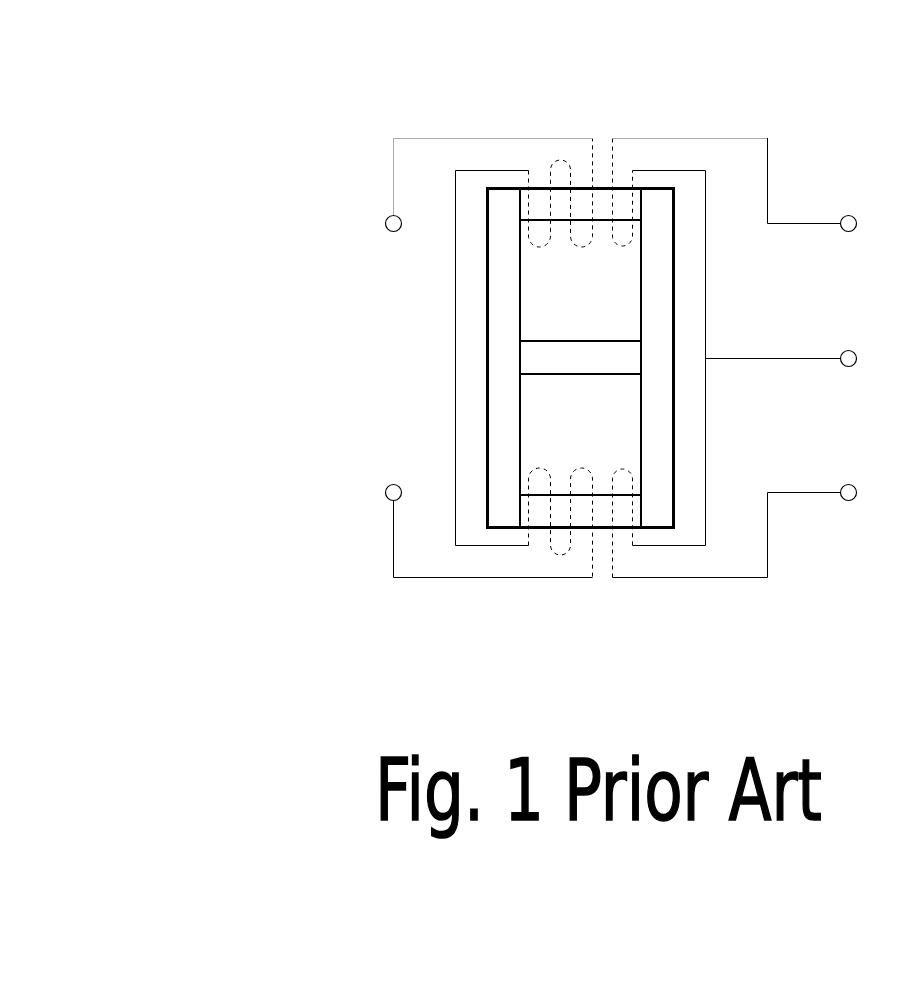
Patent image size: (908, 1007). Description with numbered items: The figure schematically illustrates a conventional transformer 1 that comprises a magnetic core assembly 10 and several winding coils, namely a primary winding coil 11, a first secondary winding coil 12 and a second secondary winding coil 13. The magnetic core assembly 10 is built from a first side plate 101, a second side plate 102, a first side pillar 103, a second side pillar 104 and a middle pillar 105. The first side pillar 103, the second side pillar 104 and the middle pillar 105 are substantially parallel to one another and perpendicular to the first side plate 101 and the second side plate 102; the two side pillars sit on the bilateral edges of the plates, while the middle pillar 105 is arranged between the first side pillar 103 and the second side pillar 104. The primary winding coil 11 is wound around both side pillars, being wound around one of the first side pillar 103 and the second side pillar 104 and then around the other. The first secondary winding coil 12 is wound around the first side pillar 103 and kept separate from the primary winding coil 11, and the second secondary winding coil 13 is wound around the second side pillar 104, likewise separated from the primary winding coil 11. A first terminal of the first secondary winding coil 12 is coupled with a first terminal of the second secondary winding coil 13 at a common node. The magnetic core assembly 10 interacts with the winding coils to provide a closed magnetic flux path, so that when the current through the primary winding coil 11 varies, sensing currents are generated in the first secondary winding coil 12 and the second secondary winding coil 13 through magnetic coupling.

The transformer 1 is at (250, 68).
The magnetic core assembly 10 is at (208, 195).
The first side plate 101 is at (503, 300).
The second side plate 102 is at (658, 418).
The first side pillar 103 is at (538, 205).
The second side pillar 104 is at (535, 513).
The middle pillar 105 is at (570, 357).
The primary winding coil 11 is at (492, 138).
The first secondary winding coil 12 is at (767, 138).
The second secondary winding coil 13 is at (767, 577).